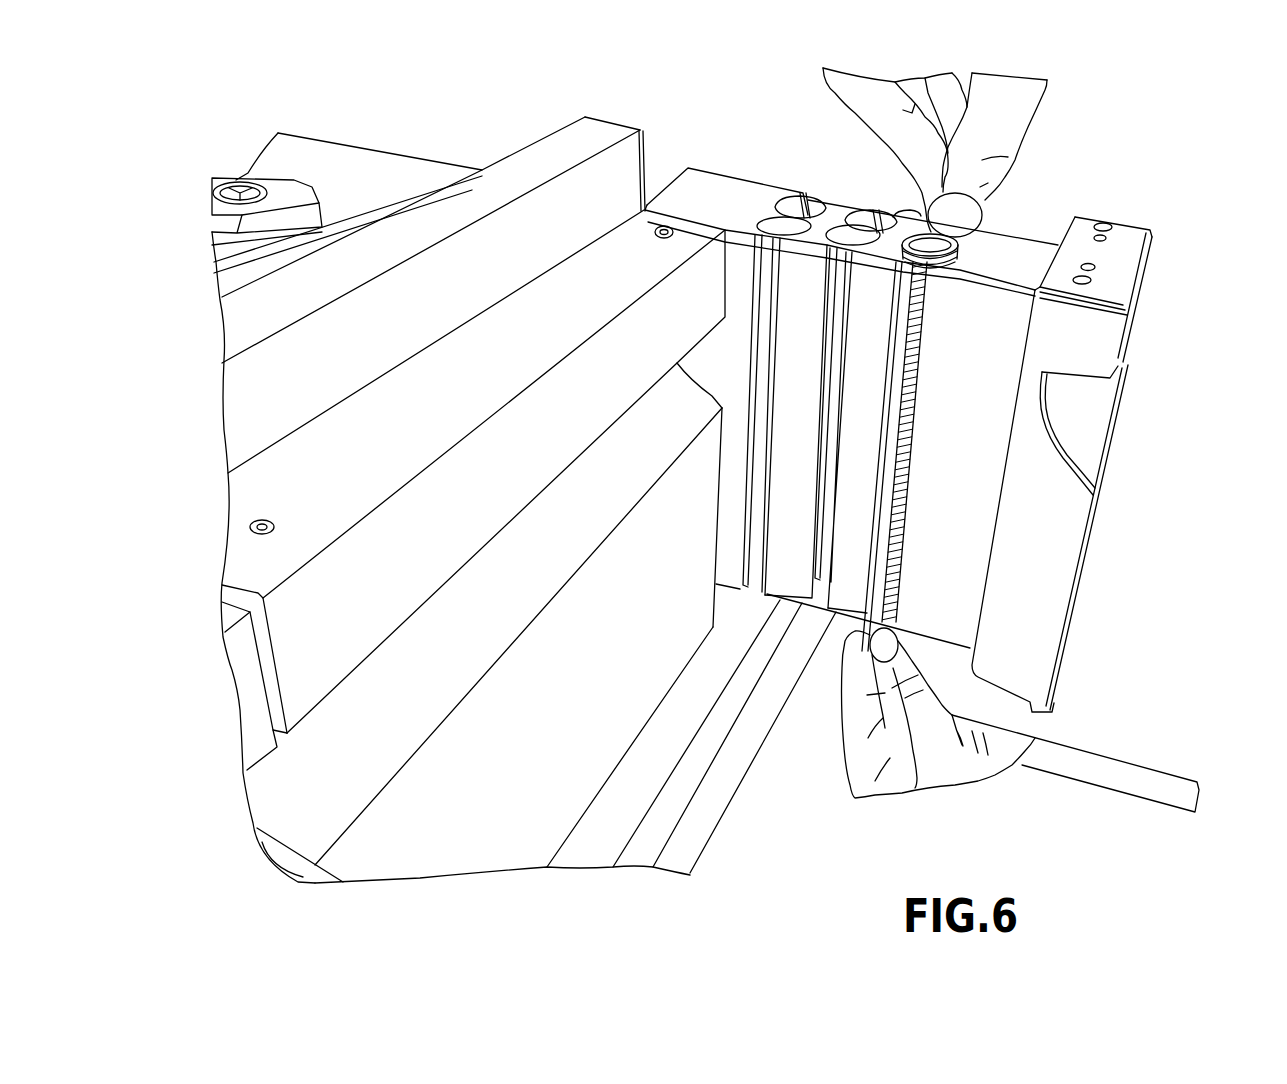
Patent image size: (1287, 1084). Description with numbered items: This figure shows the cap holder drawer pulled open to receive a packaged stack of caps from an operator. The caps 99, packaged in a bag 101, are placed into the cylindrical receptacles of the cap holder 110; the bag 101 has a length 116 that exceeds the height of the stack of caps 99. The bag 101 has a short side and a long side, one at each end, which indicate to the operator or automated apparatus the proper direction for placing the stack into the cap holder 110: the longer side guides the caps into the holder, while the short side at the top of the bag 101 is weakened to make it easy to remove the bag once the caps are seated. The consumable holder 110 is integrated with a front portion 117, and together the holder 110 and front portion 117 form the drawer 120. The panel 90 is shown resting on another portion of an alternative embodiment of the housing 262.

The housing 262 is at (583, 522).
The panel 90 is at (256, 176).
The cap holder 110 is at (840, 207).
The length 116 is at (913, 200).
The caps 99 is at (927, 243).
The bag 101 is at (905, 468).
The drawer 120 is at (1045, 224).
The front portion 117 is at (1097, 432).